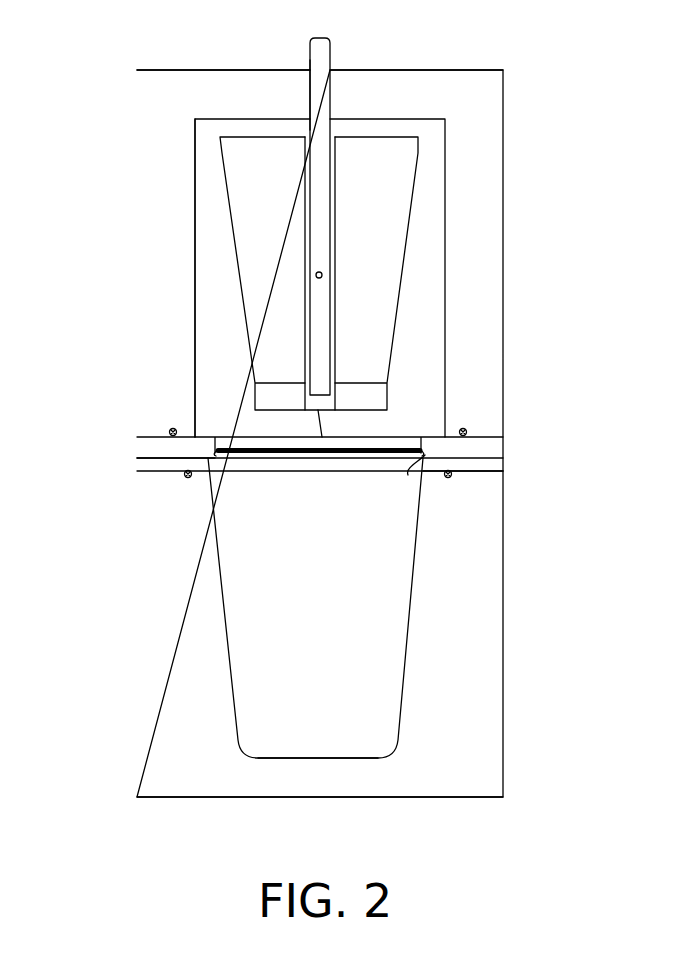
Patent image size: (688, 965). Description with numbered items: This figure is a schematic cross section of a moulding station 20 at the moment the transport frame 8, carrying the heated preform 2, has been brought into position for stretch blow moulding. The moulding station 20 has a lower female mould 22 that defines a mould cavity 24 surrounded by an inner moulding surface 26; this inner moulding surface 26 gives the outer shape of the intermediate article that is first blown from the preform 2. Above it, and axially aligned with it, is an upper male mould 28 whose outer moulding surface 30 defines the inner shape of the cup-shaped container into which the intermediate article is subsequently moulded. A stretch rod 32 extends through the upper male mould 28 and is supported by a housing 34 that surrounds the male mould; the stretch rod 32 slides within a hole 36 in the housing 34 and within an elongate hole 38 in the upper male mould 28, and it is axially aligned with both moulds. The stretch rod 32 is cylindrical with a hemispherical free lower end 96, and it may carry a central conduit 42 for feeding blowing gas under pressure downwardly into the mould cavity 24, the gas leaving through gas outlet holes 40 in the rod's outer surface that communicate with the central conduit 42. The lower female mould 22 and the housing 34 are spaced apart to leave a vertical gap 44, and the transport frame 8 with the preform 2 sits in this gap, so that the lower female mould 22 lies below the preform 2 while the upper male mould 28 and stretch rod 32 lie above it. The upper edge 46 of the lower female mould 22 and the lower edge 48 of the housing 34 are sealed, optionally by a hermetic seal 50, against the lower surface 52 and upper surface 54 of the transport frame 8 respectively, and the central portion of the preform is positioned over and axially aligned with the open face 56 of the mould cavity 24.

The preform 2 is at (402, 447).
The transport frame 8 is at (140, 447).
The moulding station 20 is at (411, 70).
The lower female mould 22 is at (200, 780).
The mould cavity 24 is at (320, 748).
The inner moulding surface 26 is at (396, 690).
The upper male mould 28 is at (195, 188).
The outer moulding surface 30 is at (195, 267).
The stretch rod 32 is at (325, 62).
The housing 34 is at (178, 82).
The hole 36 is at (305, 95).
The elongate hole 38 is at (303, 190).
The gas outlet holes 40 is at (316, 275).
The central conduit 42 is at (305, 232).
The vertical gap 44 is at (492, 473).
The upper edge 46 is at (145, 465).
The lower edge 48 is at (492, 438).
The hermetic seal 50 is at (452, 475).
The lower surface 52 is at (173, 473).
The upper surface 54 is at (150, 437).
The open face 56 is at (408, 475).
The hemispherical free lower end 96 is at (322, 437).